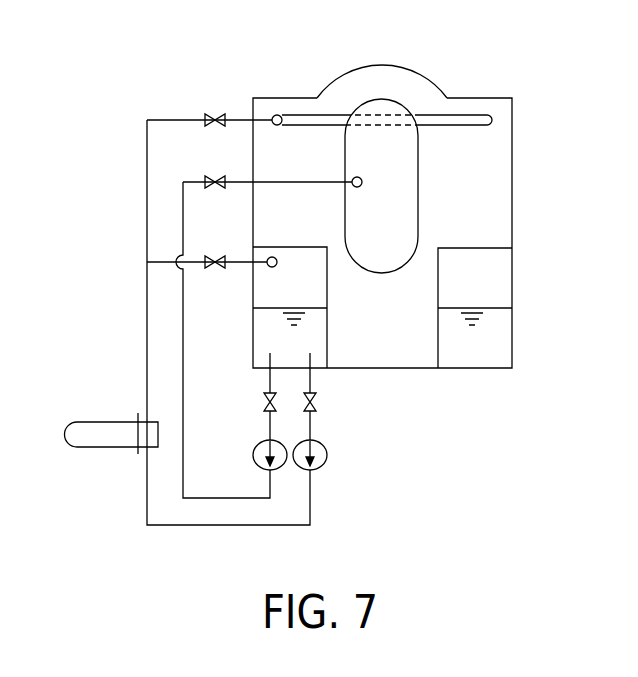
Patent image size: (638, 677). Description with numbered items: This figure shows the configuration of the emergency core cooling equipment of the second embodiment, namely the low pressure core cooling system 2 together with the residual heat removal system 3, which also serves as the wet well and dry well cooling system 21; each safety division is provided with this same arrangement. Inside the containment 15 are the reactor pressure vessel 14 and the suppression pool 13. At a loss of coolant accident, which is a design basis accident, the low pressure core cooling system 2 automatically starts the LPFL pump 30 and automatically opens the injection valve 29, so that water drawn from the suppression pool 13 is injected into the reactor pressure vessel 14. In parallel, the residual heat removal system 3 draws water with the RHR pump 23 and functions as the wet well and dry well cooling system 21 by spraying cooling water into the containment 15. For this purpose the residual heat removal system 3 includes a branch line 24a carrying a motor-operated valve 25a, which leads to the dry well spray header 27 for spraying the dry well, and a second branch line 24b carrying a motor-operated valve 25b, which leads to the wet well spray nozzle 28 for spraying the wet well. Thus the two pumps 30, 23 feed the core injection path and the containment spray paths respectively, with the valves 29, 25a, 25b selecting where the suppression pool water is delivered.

The low pressure core cooling system 2 is at (218, 498).
The residual heat removal system 3 is at (148, 468).
The suppression pool 13 is at (258, 335).
The reactor pressure vessel 14 is at (419, 220).
The containment 15 is at (512, 170).
The wet well and dry well cooling system 21 is at (147, 168).
The RHR pump 23 is at (327, 453).
The branch line 24a is at (175, 118).
The branch line 24b is at (167, 258).
The motor-operated valve 25a is at (217, 115).
The motor-operated valve 25b is at (218, 256).
The dry well spray header 27 is at (458, 114).
The wet well spray nozzle 28 is at (272, 257).
The injection valve 29 is at (216, 176).
The LPFL pump 30 is at (283, 468).